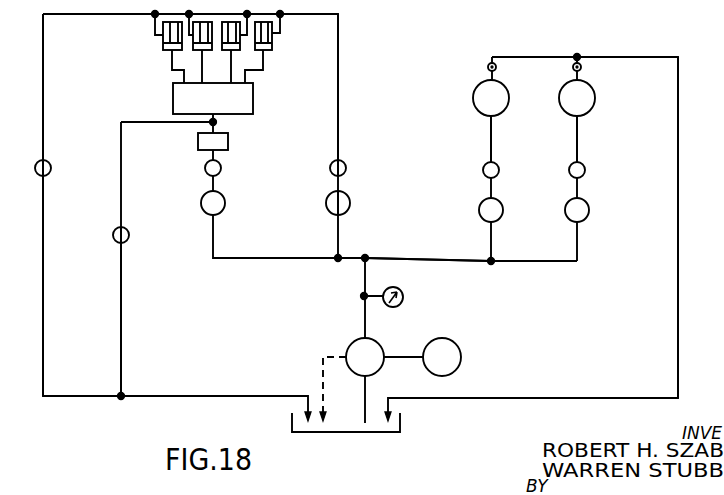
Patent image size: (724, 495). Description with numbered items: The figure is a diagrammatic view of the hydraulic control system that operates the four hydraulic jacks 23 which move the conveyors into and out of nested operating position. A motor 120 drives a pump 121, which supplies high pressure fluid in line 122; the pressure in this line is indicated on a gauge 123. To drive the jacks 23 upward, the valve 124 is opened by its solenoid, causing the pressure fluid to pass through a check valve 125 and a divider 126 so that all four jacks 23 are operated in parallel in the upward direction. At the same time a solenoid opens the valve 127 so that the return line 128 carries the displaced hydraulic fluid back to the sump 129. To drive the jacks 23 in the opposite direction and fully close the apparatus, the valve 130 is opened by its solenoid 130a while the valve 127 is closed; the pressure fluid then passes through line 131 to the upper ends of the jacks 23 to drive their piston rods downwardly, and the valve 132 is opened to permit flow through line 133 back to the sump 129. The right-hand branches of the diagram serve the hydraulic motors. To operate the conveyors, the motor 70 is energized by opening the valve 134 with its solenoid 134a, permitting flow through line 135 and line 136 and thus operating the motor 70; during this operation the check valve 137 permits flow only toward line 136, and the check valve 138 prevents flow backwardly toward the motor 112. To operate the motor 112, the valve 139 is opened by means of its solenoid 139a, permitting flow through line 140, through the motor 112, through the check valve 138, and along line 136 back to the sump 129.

The hydraulic jacks 23 is at (162, 36).
The divider 126 is at (253, 100).
The check valve 125 is at (228, 143).
The valve 124 is at (221, 170).
The valve 127 is at (51, 166).
The return line 128 is at (43, 239).
The valve 132 is at (129, 236).
The line 133 is at (122, 288).
The line 131 is at (338, 57).
The solenoid 130a is at (346, 165).
The valve 130 is at (350, 211).
The line 122 is at (388, 258).
The gauge 123 is at (403, 301).
The pump 121 is at (378, 348).
The motor 120 is at (456, 345).
The sump 129 is at (362, 433).
The check valve 138 is at (494, 60).
The check valve 137 is at (579, 60).
The motor 112 is at (500, 106).
The motor 70 is at (588, 100).
The line 140 is at (491, 140).
The line 135 is at (577, 131).
The solenoid 139a is at (498, 172).
The solenoid 134a is at (584, 172).
The valve 139 is at (502, 212).
The valve 134 is at (588, 212).
The line 136 is at (678, 188).